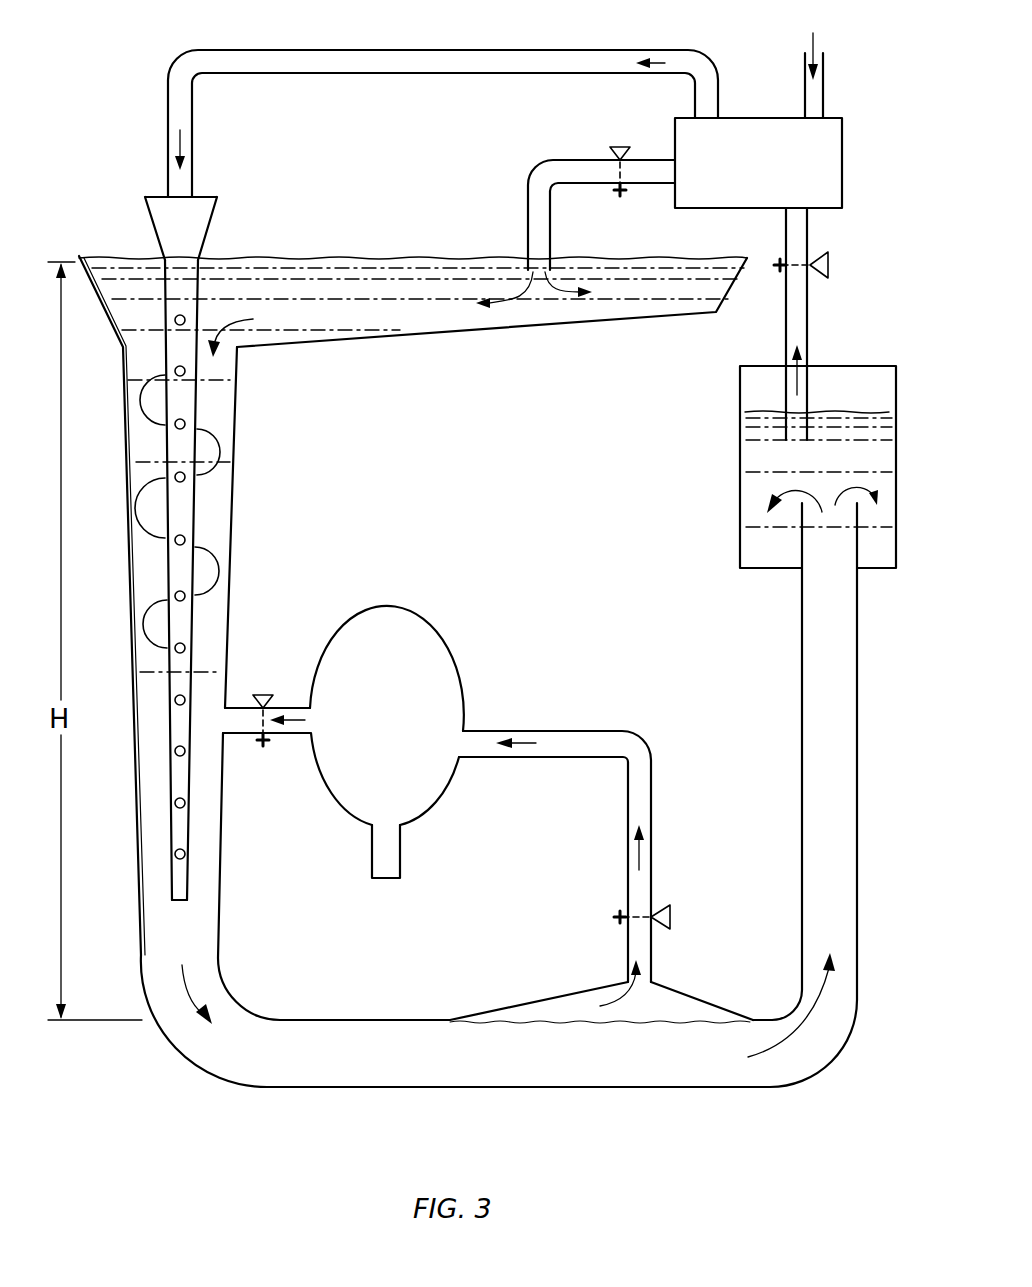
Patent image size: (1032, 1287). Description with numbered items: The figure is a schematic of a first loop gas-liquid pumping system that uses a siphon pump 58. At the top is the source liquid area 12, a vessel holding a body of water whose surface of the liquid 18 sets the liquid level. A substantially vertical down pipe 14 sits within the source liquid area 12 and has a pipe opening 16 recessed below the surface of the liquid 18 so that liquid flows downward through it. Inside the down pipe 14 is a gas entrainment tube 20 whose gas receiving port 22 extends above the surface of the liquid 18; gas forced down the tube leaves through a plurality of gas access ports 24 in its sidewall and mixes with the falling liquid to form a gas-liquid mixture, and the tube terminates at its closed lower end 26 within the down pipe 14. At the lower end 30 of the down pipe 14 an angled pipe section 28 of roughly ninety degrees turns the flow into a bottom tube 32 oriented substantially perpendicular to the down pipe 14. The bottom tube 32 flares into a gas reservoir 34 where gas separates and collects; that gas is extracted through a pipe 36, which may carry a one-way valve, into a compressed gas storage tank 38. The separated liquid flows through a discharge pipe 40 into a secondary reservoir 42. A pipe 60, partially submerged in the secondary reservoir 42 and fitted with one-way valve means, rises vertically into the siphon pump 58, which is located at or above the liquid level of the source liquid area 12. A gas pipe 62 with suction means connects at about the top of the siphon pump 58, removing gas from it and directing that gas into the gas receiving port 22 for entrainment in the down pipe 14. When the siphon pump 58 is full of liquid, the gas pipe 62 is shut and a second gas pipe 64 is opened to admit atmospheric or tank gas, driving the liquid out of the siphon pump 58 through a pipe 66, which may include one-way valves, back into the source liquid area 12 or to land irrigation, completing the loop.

The source liquid area 12 is at (469, 290).
The down pipe 14 is at (235, 596).
The pipe opening 16 is at (143, 357).
The surface of the liquid 18 is at (381, 262).
The gas entrainment tube 20 is at (168, 592).
The gas receiving port 22 is at (212, 228).
The gas access ports 24 is at (186, 424).
The tube bottom end 26 is at (178, 903).
The angled pipe section 28 is at (215, 1048).
The lower end of the down pipe 30 is at (177, 948).
The bottom tube 32 is at (385, 1090).
The gas reservoir 34 is at (678, 1008).
The pipe 36 is at (625, 872).
The compressed gas storage tank 38 is at (430, 802).
The discharge pipe 40 is at (858, 790).
The secondary reservoir 42 is at (752, 475).
The siphon pump 58 is at (845, 183).
The pipe 60 is at (812, 300).
The gas pipe 62 is at (348, 48).
The second gas pipe 64 is at (826, 92).
The pipe 66 is at (582, 160).